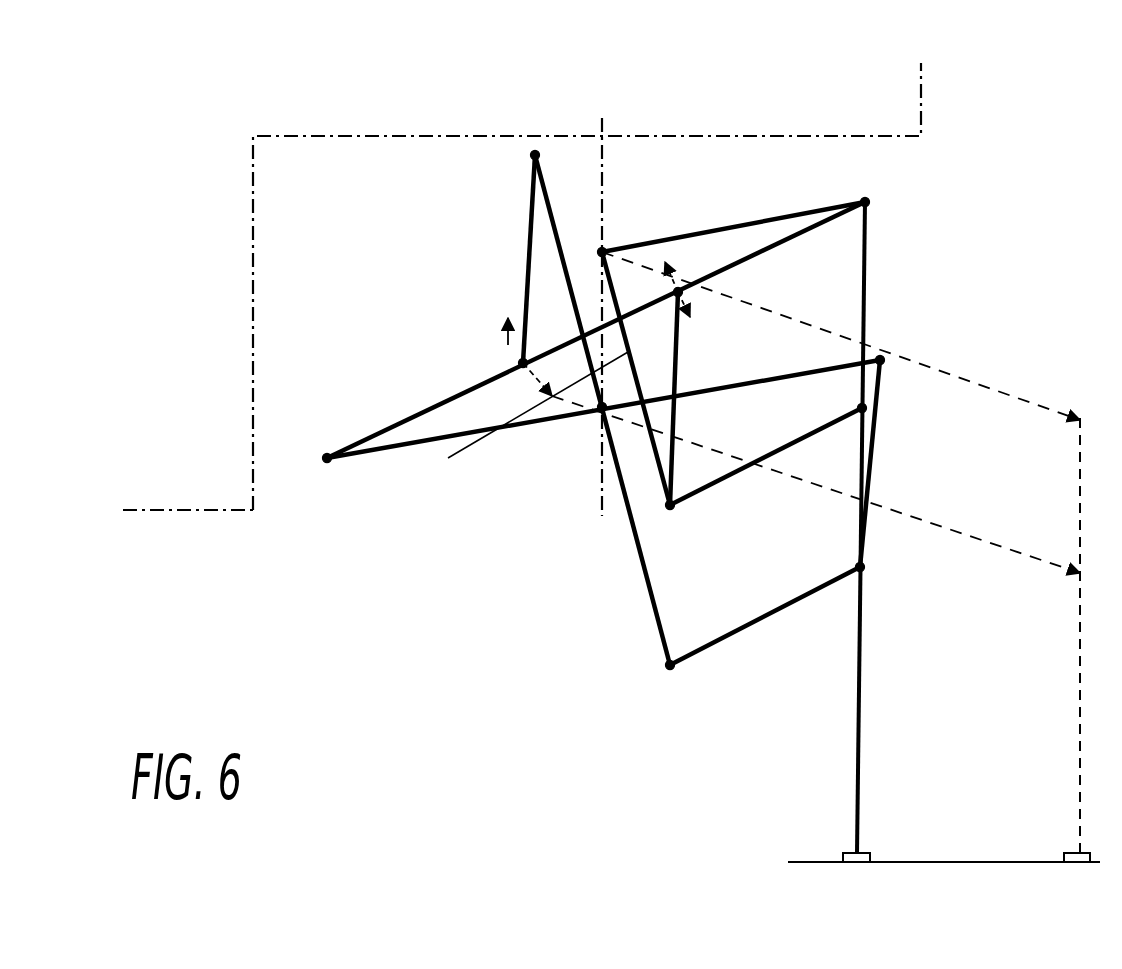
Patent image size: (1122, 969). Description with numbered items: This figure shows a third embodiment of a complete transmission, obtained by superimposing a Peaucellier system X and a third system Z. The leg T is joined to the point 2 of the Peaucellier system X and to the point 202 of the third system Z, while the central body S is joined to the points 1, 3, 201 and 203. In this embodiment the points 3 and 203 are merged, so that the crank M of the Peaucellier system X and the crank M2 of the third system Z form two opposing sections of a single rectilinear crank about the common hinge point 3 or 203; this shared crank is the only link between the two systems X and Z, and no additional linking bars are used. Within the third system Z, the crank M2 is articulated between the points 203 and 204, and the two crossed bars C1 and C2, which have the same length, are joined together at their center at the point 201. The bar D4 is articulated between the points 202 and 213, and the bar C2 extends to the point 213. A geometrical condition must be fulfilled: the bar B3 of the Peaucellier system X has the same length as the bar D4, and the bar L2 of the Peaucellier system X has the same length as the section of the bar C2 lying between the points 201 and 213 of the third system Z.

The point 1 is at (605, 250).
The point 2 is at (866, 406).
The hinge point 3 is at (502, 428).
The point 203 is at (602, 432).
The point 204 is at (515, 364).
The point 201 is at (599, 410).
The point 202 is at (862, 567).
The point 213 is at (660, 673).
The crank M is at (676, 292).
The crank M2 is at (601, 327).
The bar L2 is at (634, 382).
The crossed bar C1 is at (828, 368).
The crossed bar C2 is at (650, 599).
The bar B3 is at (746, 472).
The bar D4 is at (746, 627).
The leg T is at (862, 688).
The Peaucellier system X is at (940, 227).
The central body S is at (250, 556).
The third system Z is at (576, 652).